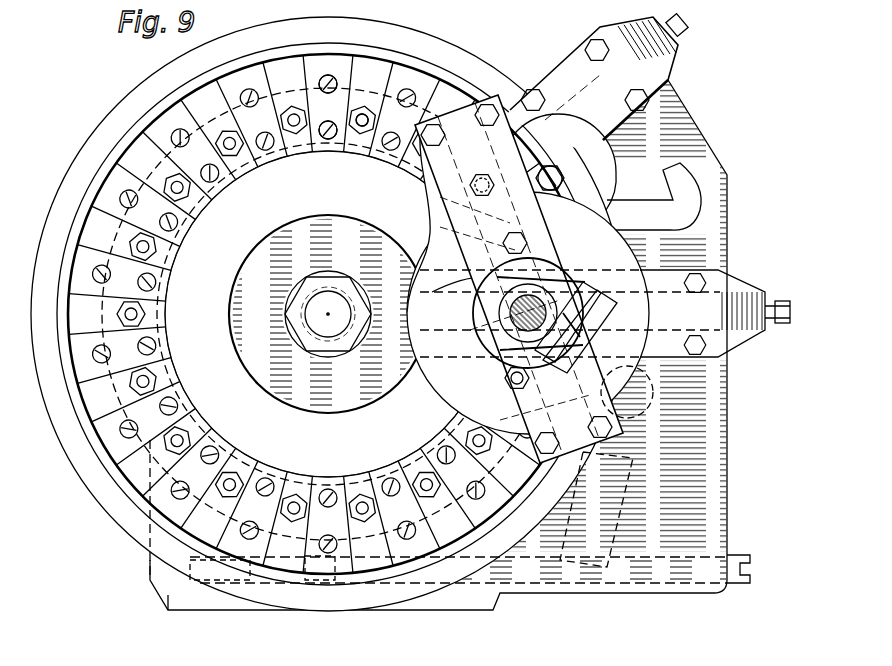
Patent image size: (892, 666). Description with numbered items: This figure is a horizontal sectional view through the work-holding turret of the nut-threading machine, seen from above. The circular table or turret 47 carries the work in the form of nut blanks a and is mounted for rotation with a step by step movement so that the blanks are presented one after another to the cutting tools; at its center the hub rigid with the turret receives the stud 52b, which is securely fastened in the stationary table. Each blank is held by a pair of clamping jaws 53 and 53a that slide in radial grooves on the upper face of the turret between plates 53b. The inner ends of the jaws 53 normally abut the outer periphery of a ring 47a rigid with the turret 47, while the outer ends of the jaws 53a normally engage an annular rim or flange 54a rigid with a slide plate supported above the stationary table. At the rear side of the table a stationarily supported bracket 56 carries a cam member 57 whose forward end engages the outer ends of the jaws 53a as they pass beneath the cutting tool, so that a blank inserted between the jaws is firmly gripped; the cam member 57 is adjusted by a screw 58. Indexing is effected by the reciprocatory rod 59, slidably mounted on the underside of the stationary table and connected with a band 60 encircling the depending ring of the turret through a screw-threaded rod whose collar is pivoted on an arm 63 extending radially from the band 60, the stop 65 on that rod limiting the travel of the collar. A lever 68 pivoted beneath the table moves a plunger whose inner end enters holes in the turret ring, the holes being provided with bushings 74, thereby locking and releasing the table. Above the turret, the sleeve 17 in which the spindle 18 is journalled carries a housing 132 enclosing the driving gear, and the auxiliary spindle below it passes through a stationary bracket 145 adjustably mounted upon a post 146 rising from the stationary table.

The annular rim or flange 54a is at (112, 158).
The clamping jaw 53 is at (328, 314).
The clamping jaw 53a is at (308, 85).
The plates 53b is at (330, 116).
The nut blank a is at (373, 105).
The ring 47a is at (328, 314).
The circular table or turret 47 is at (328, 315).
The stud 52b is at (318, 324).
The housing 132 is at (430, 380).
The stationary bracket 145 is at (417, 203).
The bracket 56 is at (562, 73).
The cam member 57 is at (568, 137).
The post 146 is at (627, 176).
The screw 58 is at (780, 318).
The sleeve 17 is at (500, 277).
The spindle 18 is at (497, 320).
The bushing 74 is at (472, 330).
The stop 65 is at (630, 447).
The lever 68 is at (615, 500).
The reciprocatory rod 59 is at (437, 584).
The band 60 is at (293, 478).
The arm 63 is at (290, 578).